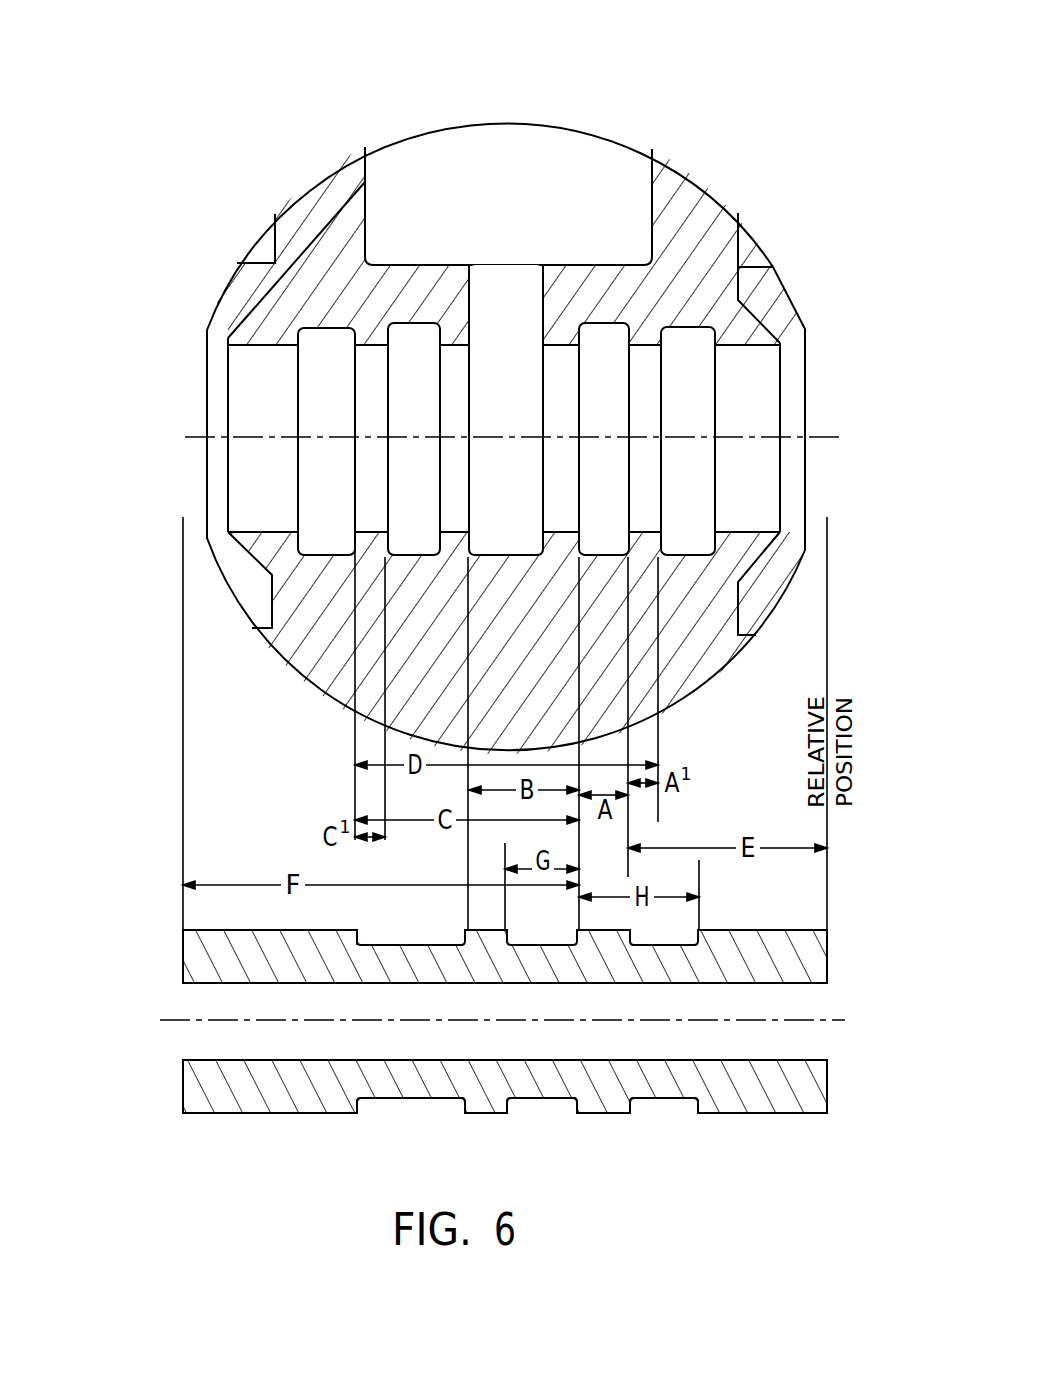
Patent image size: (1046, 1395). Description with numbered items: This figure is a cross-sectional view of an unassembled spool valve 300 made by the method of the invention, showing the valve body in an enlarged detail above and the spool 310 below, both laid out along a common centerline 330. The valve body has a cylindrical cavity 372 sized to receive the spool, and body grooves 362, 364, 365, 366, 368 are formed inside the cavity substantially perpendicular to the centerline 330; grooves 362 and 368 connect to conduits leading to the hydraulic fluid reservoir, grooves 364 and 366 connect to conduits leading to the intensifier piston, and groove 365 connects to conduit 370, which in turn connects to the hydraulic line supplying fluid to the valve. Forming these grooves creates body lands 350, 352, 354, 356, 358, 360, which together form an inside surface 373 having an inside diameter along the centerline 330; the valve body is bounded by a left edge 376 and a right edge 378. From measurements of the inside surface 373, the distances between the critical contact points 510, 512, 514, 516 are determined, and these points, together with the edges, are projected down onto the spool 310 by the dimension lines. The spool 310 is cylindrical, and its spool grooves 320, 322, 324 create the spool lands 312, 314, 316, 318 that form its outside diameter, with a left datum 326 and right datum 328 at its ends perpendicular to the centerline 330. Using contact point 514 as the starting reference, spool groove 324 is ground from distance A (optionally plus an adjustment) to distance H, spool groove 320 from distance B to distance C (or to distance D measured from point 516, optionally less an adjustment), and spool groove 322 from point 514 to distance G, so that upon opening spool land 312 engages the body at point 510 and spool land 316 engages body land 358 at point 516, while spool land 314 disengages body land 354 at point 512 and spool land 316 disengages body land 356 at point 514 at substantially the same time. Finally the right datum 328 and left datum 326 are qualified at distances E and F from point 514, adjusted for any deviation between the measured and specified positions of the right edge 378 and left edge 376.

The spool valve 300 is at (46, 448).
The spool 310 is at (183, 930).
The spool land 312 is at (258, 928).
The spool land 314 is at (493, 933).
The spool land 316 is at (598, 933).
The spool land 318 is at (752, 930).
The spool groove 320 is at (415, 957).
The spool groove 322 is at (550, 957).
The spool groove 324 is at (672, 957).
The left datum 326 is at (183, 1113).
The right datum 328 is at (827, 1095).
The centerline 330 is at (823, 437).
The body land 350 is at (267, 340).
The body land 352 is at (340, 345).
The body land 354 is at (425, 340).
The body land 356 is at (597, 343).
The body land 358 is at (692, 343).
The body land 360 is at (760, 340).
The body groove 362 is at (311, 338).
The body groove 364 is at (412, 347).
The body groove 365 is at (487, 280).
The body groove 366 is at (622, 343).
The body groove 368 is at (738, 330).
The conduit 370 is at (455, 335).
The cavity 372 is at (753, 493).
The inside surface 373 is at (257, 348).
The left edge 376 is at (207, 327).
The right edge 378 is at (805, 508).
The critical contact point 510 is at (352, 545).
The critical contact point 512 is at (472, 545).
The critical contact point 514 is at (592, 533).
The critical contact point 516 is at (662, 545).